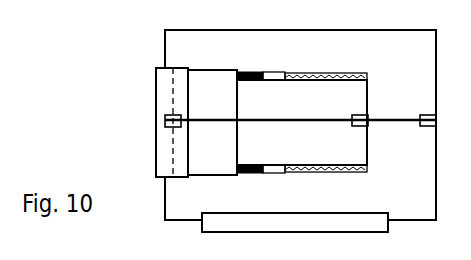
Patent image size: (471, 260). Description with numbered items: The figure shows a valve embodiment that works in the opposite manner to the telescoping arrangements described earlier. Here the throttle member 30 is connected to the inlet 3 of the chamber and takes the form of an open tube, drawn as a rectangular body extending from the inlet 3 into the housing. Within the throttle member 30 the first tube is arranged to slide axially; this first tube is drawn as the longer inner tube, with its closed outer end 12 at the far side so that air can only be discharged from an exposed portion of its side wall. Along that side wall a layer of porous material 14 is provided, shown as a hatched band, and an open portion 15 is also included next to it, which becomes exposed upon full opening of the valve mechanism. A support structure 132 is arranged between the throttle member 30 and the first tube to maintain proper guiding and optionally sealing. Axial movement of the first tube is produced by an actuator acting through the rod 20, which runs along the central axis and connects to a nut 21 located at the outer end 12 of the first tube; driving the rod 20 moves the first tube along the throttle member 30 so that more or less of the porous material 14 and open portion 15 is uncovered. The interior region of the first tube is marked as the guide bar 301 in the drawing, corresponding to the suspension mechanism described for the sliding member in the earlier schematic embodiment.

The inlet 3 is at (160, 98).
The outer end 12 is at (368, 145).
The layer of porous material 14 is at (340, 175).
The open portion 15 is at (280, 173).
The rod 20 is at (253, 119).
The nut 21 is at (369, 117).
The throttle member 30 is at (228, 165).
The support structure 132 is at (248, 70).
The guide bar 301 is at (330, 157).